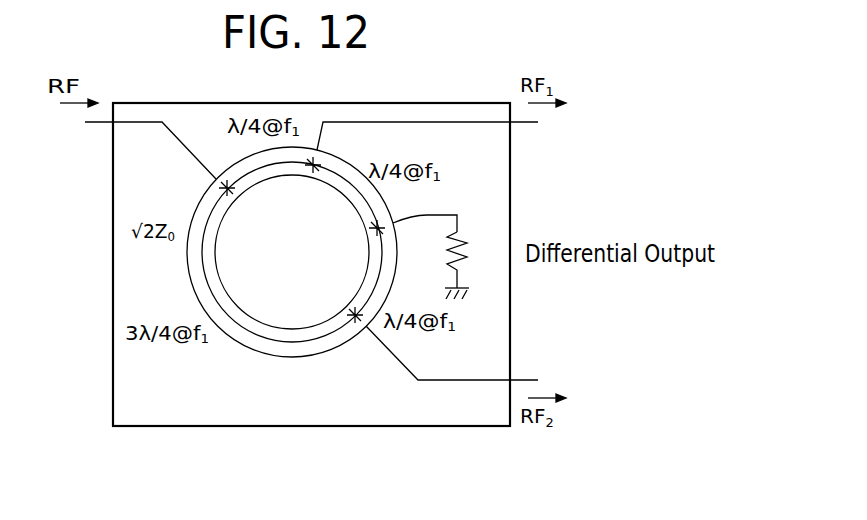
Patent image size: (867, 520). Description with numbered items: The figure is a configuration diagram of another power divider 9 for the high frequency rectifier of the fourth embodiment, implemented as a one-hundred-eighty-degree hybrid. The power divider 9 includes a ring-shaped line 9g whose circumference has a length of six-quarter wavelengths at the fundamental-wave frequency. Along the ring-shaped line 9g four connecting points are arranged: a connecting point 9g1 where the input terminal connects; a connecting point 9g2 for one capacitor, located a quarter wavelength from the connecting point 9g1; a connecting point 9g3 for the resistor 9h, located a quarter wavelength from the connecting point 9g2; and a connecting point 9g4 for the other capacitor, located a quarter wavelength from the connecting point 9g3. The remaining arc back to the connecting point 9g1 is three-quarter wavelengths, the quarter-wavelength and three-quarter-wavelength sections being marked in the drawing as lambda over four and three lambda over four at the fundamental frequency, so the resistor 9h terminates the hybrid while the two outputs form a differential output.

The power divider 9 is at (180, 426).
The ring-shaped line 9g is at (298, 357).
The connecting point with the input terminal 9g1 is at (229, 192).
The connecting point with the capacitor 9g2 is at (313, 170).
The connecting point with the resistor 9g3 is at (375, 230).
The connecting point with the capacitor 9g4 is at (353, 312).
The resistor 9h is at (463, 236).